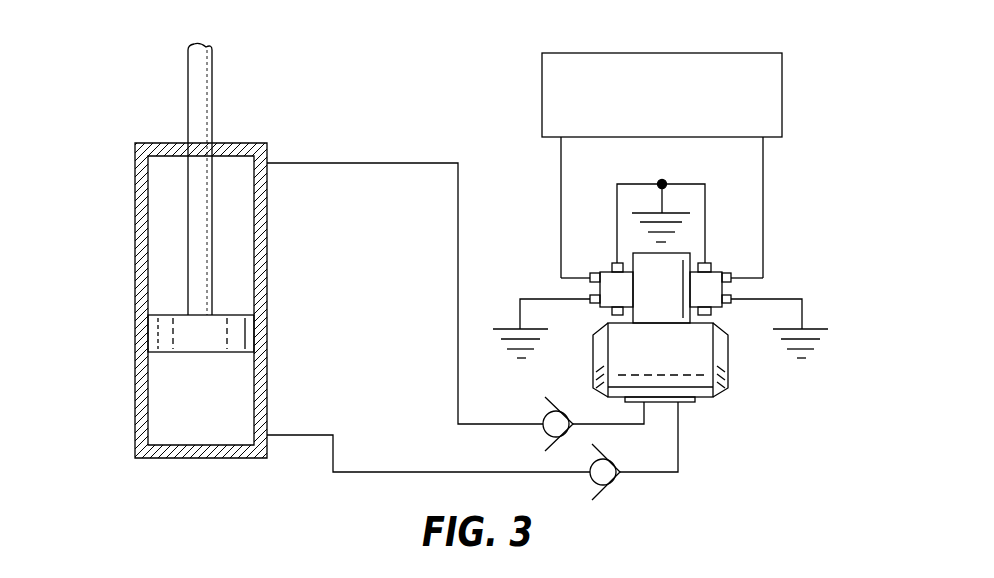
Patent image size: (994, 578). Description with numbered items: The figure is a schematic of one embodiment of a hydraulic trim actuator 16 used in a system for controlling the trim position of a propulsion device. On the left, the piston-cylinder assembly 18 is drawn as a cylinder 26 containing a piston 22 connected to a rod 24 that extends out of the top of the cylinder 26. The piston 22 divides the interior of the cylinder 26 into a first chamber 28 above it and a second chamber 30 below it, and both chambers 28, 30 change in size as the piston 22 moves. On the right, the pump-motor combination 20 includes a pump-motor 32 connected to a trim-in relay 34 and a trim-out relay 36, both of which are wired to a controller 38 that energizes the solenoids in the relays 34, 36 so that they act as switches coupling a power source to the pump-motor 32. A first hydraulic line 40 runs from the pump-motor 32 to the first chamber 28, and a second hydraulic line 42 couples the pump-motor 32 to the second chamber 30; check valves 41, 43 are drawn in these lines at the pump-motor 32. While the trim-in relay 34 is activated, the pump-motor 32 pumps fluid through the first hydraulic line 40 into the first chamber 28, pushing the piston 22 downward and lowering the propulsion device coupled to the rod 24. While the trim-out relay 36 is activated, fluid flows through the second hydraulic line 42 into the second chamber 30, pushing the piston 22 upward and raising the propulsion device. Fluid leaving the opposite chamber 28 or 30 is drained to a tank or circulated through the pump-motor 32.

The hydraulic trim actuator 16 is at (443, 84).
The piston-cylinder assembly 18 is at (114, 313).
The pump-motor combination 20 is at (751, 390).
The piston 22 is at (233, 334).
The rod 24 is at (188, 108).
The cylinder 26 is at (260, 264).
The first chamber 28 is at (232, 210).
The second chamber 30 is at (233, 399).
The pump-motor 32 is at (703, 381).
The trim-in relay 34 is at (617, 285).
The trim-out relay 36 is at (705, 285).
The controller 38 is at (783, 104).
The first hydraulic line 40 is at (370, 162).
The first check valve 41 is at (546, 412).
The second hydraulic line 42 is at (338, 452).
The second check valve 43 is at (612, 485).